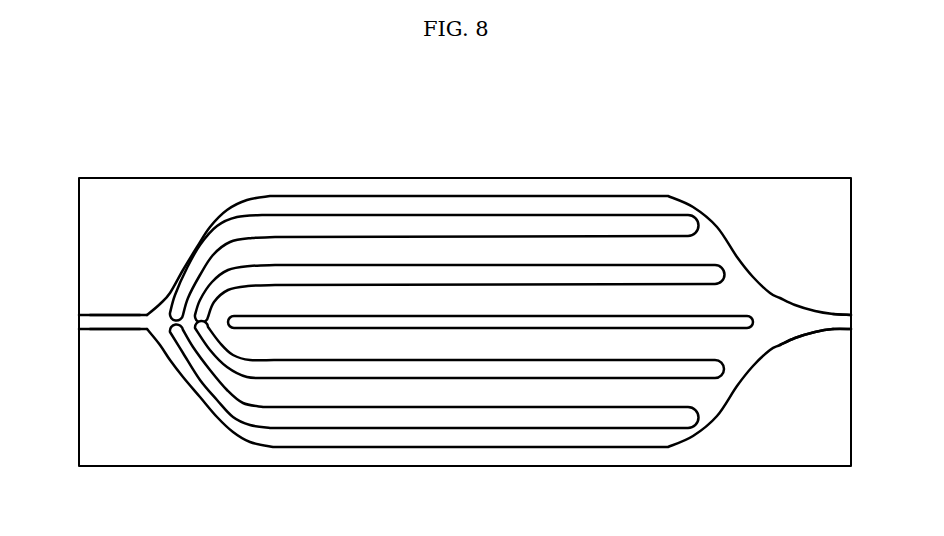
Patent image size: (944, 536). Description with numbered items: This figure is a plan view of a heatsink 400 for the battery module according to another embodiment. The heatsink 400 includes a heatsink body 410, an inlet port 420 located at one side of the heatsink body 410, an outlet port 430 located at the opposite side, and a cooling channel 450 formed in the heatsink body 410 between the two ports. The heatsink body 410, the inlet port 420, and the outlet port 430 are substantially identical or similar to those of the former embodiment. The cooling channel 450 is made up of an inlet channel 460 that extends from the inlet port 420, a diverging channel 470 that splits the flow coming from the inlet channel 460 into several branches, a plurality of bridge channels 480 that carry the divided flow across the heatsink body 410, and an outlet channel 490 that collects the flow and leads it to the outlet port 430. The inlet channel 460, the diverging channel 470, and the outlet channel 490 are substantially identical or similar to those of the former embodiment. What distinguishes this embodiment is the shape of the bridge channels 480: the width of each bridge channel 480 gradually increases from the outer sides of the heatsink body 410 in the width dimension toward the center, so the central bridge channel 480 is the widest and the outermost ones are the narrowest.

The heatsink 400 is at (160, 106).
The heatsink body 410 is at (663, 178).
The inlet port 420 is at (79, 322).
The outlet port 430 is at (851, 322).
The cooling channel 450 is at (518, 186).
The inlet channel 460 is at (107, 325).
The diverging channel 470 is at (161, 370).
The bridge channel 480 is at (519, 458).
The outlet channel 490 is at (806, 324).